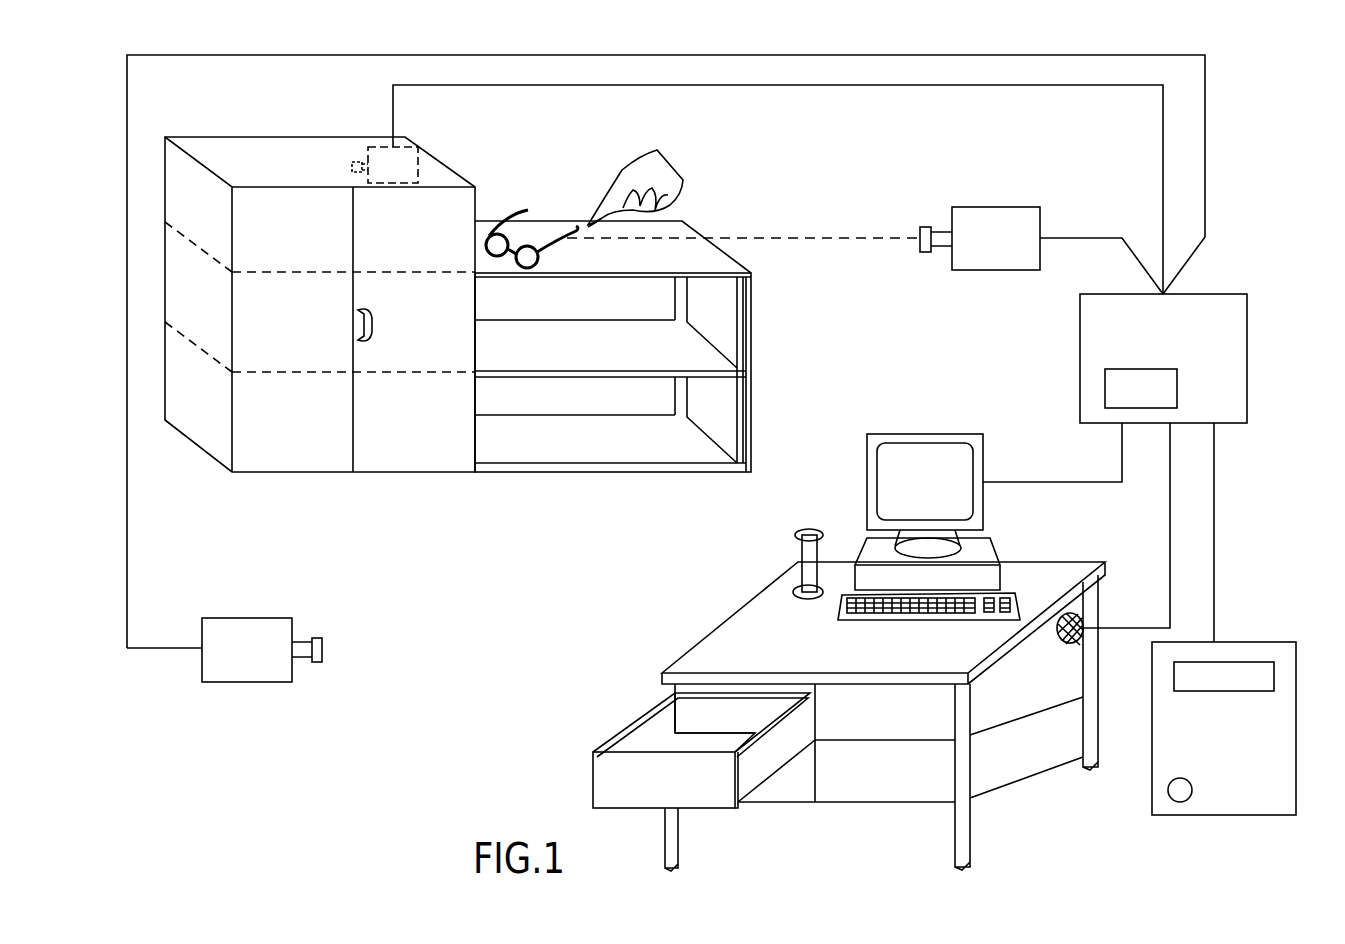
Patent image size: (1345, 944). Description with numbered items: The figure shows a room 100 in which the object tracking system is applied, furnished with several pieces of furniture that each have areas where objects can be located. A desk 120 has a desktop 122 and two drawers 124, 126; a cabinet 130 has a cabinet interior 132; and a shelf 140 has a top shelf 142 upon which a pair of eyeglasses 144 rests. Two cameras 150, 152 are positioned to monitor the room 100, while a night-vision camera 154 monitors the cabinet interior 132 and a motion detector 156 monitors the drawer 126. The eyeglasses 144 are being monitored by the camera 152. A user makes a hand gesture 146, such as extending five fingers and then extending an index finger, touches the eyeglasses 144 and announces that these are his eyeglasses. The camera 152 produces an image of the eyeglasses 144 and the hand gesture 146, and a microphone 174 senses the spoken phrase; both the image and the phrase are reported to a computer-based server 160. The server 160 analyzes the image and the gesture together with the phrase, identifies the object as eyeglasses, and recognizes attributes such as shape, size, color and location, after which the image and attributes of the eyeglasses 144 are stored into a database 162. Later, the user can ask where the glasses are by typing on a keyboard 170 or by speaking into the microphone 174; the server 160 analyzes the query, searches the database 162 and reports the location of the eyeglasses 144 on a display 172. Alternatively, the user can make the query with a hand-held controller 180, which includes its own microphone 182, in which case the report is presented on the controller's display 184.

The room 100 is at (1267, 125).
The desk 120 is at (862, 710).
The desktop 122 is at (780, 618).
The drawer 124 is at (658, 730).
The drawer 126 is at (916, 722).
The cabinet 130 is at (232, 158).
The cabinet interior 132 is at (273, 253).
The shelf 140 is at (708, 278).
The top shelf 142 is at (707, 268).
The eyeglasses 144 is at (557, 240).
The hand gesture 146 is at (672, 158).
The camera 150 is at (252, 660).
The camera 152 is at (1002, 232).
The night-vision camera 154 is at (402, 165).
The motion detector 156 is at (1075, 618).
The server 160 is at (1218, 320).
The database 162 is at (1115, 385).
The keyboard 170 is at (843, 593).
The display 172 is at (918, 433).
The microphone 174 is at (803, 535).
The hand-held controller 180 is at (1266, 792).
The microphone 182 is at (1180, 790).
The display 184 is at (1233, 680).